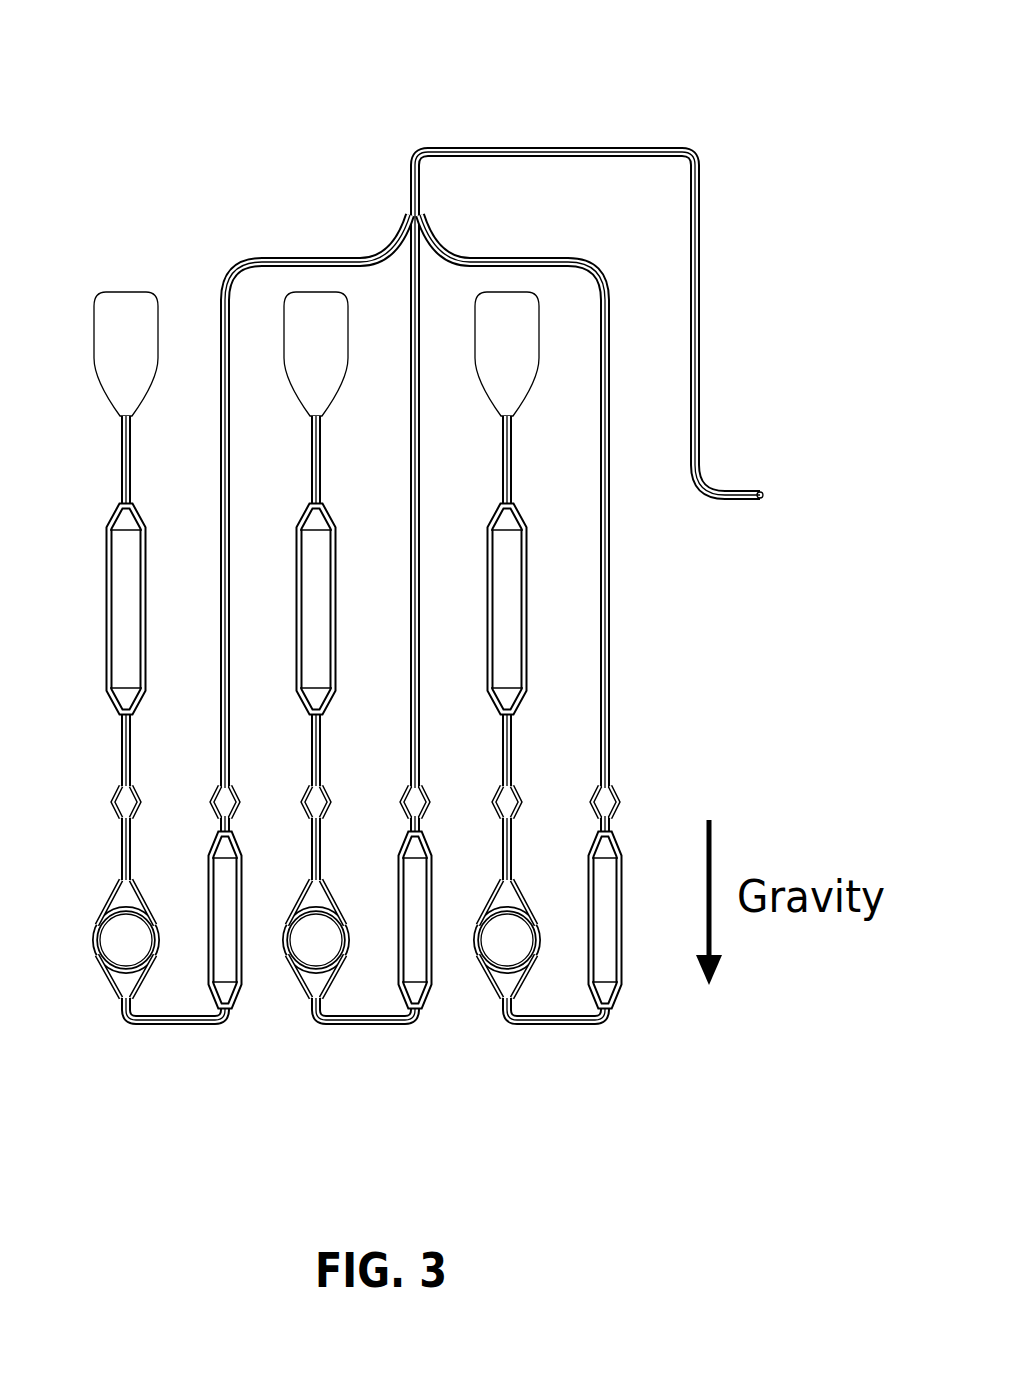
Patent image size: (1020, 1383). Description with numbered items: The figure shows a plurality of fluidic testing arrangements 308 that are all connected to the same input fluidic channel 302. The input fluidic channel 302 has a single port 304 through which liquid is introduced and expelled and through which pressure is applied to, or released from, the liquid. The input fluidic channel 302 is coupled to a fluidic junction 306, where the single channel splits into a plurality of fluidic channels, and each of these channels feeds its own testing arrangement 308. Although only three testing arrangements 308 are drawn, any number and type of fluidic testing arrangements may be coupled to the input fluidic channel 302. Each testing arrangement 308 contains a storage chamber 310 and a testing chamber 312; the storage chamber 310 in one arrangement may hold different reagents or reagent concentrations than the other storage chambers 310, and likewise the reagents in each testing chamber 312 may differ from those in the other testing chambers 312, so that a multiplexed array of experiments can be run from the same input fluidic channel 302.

The input fluidic channel 302 is at (530, 148).
The port 304 is at (762, 498).
The fluidic junction 306 is at (412, 210).
The testing arrangement 308 is at (166, 1059).
The storage chamber 310 is at (106, 640).
The testing chamber 312 is at (95, 925).